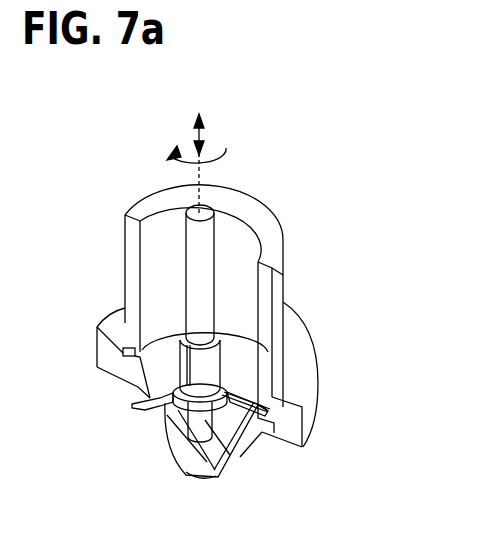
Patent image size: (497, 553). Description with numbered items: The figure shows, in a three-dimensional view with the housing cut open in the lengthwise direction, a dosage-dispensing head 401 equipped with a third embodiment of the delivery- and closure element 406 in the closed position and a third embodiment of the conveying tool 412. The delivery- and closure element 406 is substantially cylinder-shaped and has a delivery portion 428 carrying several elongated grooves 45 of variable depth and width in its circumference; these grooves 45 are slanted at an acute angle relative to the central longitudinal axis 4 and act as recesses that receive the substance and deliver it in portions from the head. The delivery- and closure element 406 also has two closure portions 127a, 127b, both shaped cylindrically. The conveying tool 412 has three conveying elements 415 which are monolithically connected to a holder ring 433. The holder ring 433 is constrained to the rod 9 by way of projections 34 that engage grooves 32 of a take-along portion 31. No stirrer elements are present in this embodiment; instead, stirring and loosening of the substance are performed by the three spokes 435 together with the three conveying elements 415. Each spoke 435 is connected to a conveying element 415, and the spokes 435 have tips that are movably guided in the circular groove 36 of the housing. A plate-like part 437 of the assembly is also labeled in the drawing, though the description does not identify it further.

The central longitudinal axis 4 is at (197, 182).
The dosage-dispensing head 401 is at (311, 211).
The rod 9 is at (190, 272).
The circular groove 36 is at (97, 325).
The take-along portion 31 is at (207, 379).
The grooves 32 is at (193, 367).
The holder ring 433 is at (182, 388).
The projections 34 is at (223, 386).
The spokes 435 is at (147, 398).
The plate 437 is at (133, 407).
The closure portion 127b is at (190, 420).
The closure portion 127a is at (195, 477).
The conveying elements 415 is at (173, 458).
The delivery portion 428 is at (208, 438).
The elongated grooves 45 is at (253, 442).
The delivery- and closure element 406 is at (240, 432).
The conveying tool 412 is at (138, 422).